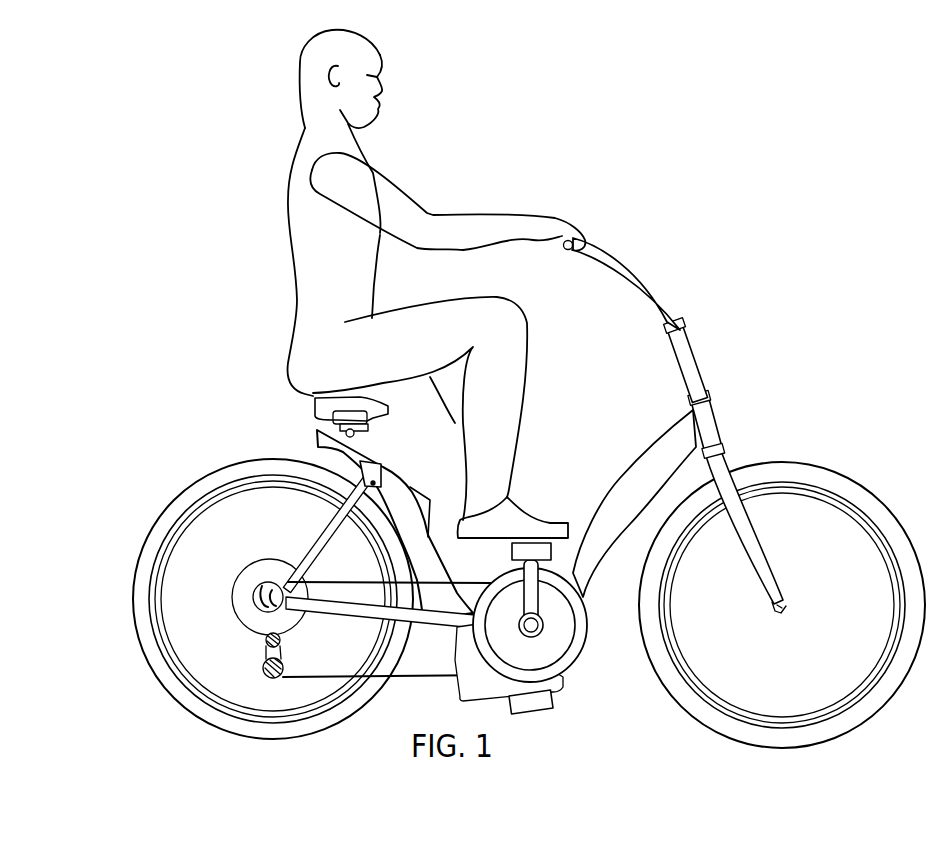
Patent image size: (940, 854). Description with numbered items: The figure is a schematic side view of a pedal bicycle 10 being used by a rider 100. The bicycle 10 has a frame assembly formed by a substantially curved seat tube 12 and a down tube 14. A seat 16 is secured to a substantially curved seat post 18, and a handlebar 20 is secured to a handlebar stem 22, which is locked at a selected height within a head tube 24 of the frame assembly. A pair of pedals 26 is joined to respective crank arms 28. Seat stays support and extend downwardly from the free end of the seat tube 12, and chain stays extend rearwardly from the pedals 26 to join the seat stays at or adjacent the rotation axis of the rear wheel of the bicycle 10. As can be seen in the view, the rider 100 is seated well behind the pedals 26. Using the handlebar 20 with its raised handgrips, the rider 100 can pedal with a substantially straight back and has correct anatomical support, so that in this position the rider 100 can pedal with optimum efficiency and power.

The pedal bicycle 10 is at (529, 395).
The rider 100 is at (445, 158).
The seat tube 12 is at (430, 533).
The down tube 14 is at (638, 455).
The seat 16 is at (315, 403).
The seat post 18 is at (315, 433).
The handlebar 20 is at (637, 273).
The handlebar stem 22 is at (700, 375).
The head tube 24 is at (717, 428).
The pedals 26 is at (557, 702).
The crank arms 28 is at (543, 607).